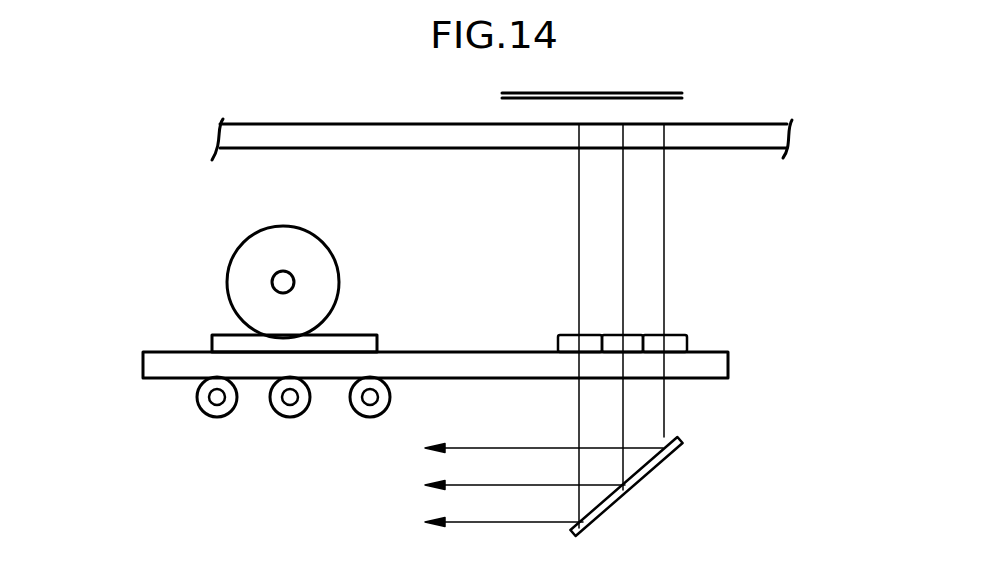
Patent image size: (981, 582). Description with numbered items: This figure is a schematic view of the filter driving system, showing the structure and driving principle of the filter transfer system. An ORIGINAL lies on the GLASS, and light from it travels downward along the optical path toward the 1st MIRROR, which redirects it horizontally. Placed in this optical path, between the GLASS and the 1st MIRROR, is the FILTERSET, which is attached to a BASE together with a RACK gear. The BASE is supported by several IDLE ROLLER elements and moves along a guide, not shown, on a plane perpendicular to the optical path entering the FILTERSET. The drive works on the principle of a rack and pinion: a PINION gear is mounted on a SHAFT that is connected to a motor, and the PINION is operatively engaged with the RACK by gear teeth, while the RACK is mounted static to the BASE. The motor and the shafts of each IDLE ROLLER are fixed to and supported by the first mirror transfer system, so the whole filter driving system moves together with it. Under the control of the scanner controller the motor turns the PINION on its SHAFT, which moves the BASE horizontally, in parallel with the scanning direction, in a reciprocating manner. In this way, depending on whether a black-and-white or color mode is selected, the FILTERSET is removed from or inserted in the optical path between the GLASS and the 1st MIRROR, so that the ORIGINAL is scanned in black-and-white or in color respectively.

The glass GLASS is at (750, 138).
The original ORIGINAL is at (682, 98).
The pinion gear PINION is at (249, 263).
The shaft SHAFT is at (295, 281).
The rack gear RACK is at (220, 343).
The base BASE is at (152, 370).
The filter set FILTERSET is at (678, 342).
The idle roller IDLE ROLLER is at (351, 408).
The first mirror 1st MIRROR is at (655, 472).